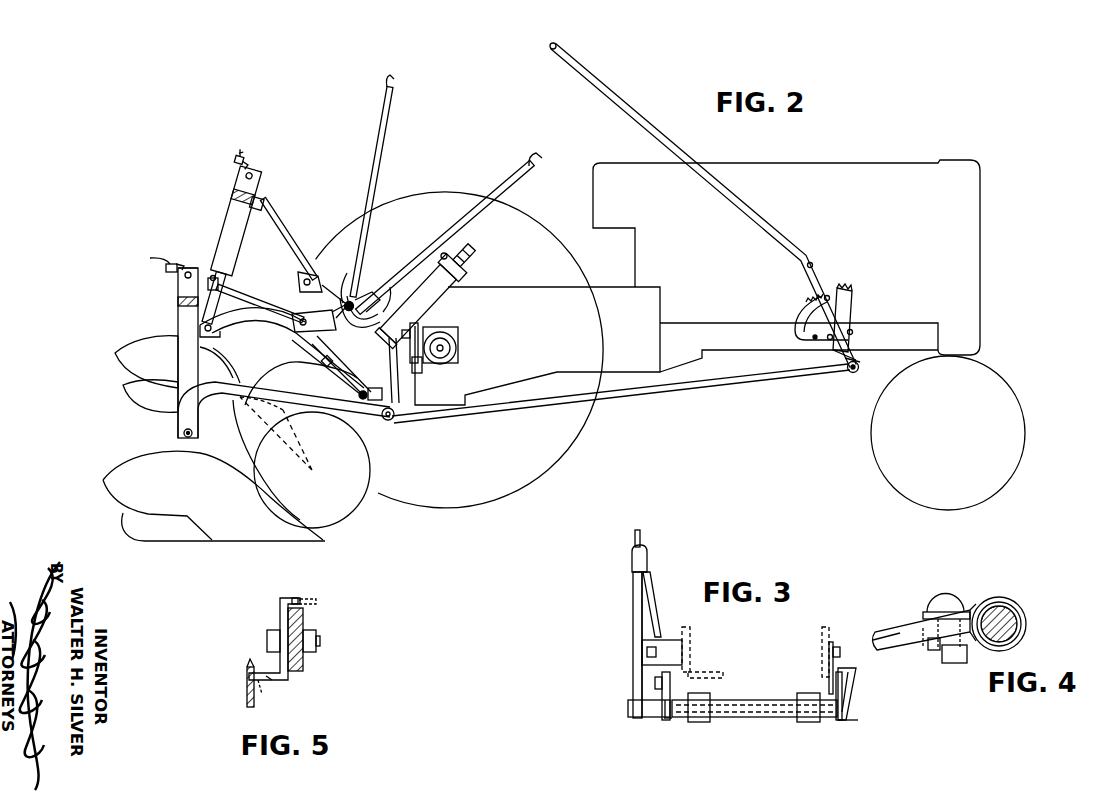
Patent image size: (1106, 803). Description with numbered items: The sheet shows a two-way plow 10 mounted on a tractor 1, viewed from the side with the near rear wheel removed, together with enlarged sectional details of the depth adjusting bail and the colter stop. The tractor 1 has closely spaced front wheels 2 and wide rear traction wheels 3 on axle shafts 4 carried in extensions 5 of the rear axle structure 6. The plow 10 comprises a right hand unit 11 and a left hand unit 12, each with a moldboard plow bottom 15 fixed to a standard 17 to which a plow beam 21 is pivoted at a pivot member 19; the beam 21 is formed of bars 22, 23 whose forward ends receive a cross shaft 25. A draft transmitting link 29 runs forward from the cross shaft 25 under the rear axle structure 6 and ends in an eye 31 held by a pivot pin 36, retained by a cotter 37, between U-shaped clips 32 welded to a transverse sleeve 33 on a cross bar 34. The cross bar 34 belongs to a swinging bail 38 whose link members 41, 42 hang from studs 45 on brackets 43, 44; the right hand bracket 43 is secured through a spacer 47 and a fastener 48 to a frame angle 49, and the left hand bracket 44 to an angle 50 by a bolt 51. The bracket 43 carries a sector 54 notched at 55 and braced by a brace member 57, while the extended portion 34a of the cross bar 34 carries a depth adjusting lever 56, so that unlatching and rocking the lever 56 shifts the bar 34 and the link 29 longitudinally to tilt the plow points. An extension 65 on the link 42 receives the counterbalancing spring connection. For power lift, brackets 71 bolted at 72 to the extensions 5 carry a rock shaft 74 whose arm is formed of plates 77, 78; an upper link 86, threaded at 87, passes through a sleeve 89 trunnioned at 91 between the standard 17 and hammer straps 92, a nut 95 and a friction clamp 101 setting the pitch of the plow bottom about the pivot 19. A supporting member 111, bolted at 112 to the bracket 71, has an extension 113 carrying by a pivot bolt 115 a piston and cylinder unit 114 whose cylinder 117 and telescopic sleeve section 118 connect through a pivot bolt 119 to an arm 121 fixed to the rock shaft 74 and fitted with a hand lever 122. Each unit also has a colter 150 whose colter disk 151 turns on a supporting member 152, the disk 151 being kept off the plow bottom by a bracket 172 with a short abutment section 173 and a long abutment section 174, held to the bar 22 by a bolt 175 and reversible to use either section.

In FIG. 2, the tractor 1 is at (888, 150).
In FIG. 2, the front wheels 2 is at (1010, 395).
In FIG. 2, the rear traction wheels 3 is at (460, 192).
In FIG. 2, the axle shafts 4 is at (456, 349).
In FIG. 3, the axle shafts 4 is at (783, 725).
In FIG. 2, the rear axle housing extensions 5 is at (458, 338).
In FIG. 2, the rear axle structure 6 is at (463, 372).
In FIG. 2, the two-way plow 10 is at (258, 128).
In FIG. 2, the right hand unit 11 is at (125, 447).
In FIG. 2, the left hand unit 12 is at (121, 331).
In FIG. 2, the moldboard plow bottom 15 is at (215, 536).
In FIG. 2, the standard 17 is at (232, 227).
In FIG. 2, the pivot member 19 is at (188, 440).
In FIG. 2, the plow beam 21 is at (258, 323).
In FIG. 5, the beam bar 22 is at (303, 670).
In FIG. 2, the beam bar 23 is at (336, 410).
In FIG. 2, the cross shaft 25 is at (392, 420).
In FIG. 2, the draft transmitting link 29 is at (538, 415).
In FIG. 3, the draft transmitting link 29 is at (890, 632).
In FIG. 4, the draft transmitting link 29 is at (893, 633).
In FIG. 4, the eye 31 is at (935, 650).
In FIG. 4, the U-shaped clips 32 is at (1012, 603).
In FIG. 4, the transverse sleeve 33 is at (1022, 622).
In FIG. 2, the cross bar 34 is at (858, 356).
In FIG. 3, the cross bar 34 is at (733, 719).
In FIG. 4, the cross bar 34 is at (1009, 640).
In FIG. 3, the extended portion of cross bar 34a is at (648, 708).
In FIG. 4, the pivot pin 36 is at (941, 602).
In FIG. 4, the cotter 37 is at (956, 664).
In FIG. 3, the swinging bail 38 is at (667, 721).
In FIG. 3, the link member 41 is at (664, 708).
In FIG. 3, the link member 42 is at (850, 717).
In FIG. 2, the right hand bracket 43 is at (836, 363).
In FIG. 3, the right hand bracket 43 is at (665, 638).
In FIG. 3, the left hand bracket 44 is at (838, 645).
In FIG. 3, the stud 45 is at (660, 685).
In FIG. 3, the spacer 47 is at (686, 646).
In FIG. 3, the pin 48 is at (647, 652).
In FIG. 3, the angle 49 is at (696, 668).
In FIG. 3, the angle 50 is at (822, 630).
In FIG. 3, the bolt 51 is at (833, 653).
In FIG. 2, the sector 54 is at (800, 312).
In FIG. 3, the sector 54 is at (641, 617).
In FIG. 2, the notches 55 is at (804, 303).
In FIG. 2, the depth adjusting lever 56 is at (727, 196).
In FIG. 3, the depth adjusting lever 56 is at (633, 596).
In FIG. 2, the brace member 57 is at (850, 313).
In FIG. 3, the brace member 57 is at (655, 592).
In FIG. 3, the extension 65 is at (853, 677).
In FIG. 2, the bracket 71 is at (370, 290).
In FIG. 2, the bolts 72 is at (418, 330).
In FIG. 2, the rock shaft 74 is at (349, 276).
In FIG. 2, the plate 77 is at (320, 296).
In FIG. 2, the plate 78 is at (315, 275).
In FIG. 2, the upper link 86 is at (286, 226).
In FIG. 2, the threaded rear end 87 is at (239, 153).
In FIG. 2, the sleeve 89 is at (270, 191).
In FIG. 2, the trunnions 91 is at (183, 270).
In FIG. 2, the hammer straps 92 is at (178, 300).
In FIG. 2, the nut 95 is at (254, 160).
In FIG. 2, the friction clamp 101 is at (224, 280).
In FIG. 2, the supporting member 111 is at (437, 300).
In FIG. 2, the bolt 112 is at (420, 368).
In FIG. 2, the extension 113 is at (456, 269).
In FIG. 2, the piston and cylinder unit 114 is at (411, 272).
In FIG. 2, the pivot bolt 115 is at (448, 254).
In FIG. 2, the cylinder 117 is at (428, 252).
In FIG. 2, the telescopic sleeve section 118 is at (395, 288).
In FIG. 2, the pivot bolt 119 is at (345, 368).
In FIG. 2, the arm 121 is at (342, 367).
In FIG. 2, the hand lever 122 is at (372, 150).
In FIG. 2, the colter 150 is at (350, 517).
In FIG. 2, the colter disk 151 is at (352, 490).
In FIG. 5, the colter disk 151 is at (247, 690).
In FIG. 2, the supporting member 152 is at (373, 430).
In FIG. 5, the bracket 172 is at (285, 618).
In FIG. 5, the short abutment section 173 is at (292, 603).
In FIG. 5, the long abutment section 174 is at (316, 602).
In FIG. 5, the bolt 175 is at (272, 641).